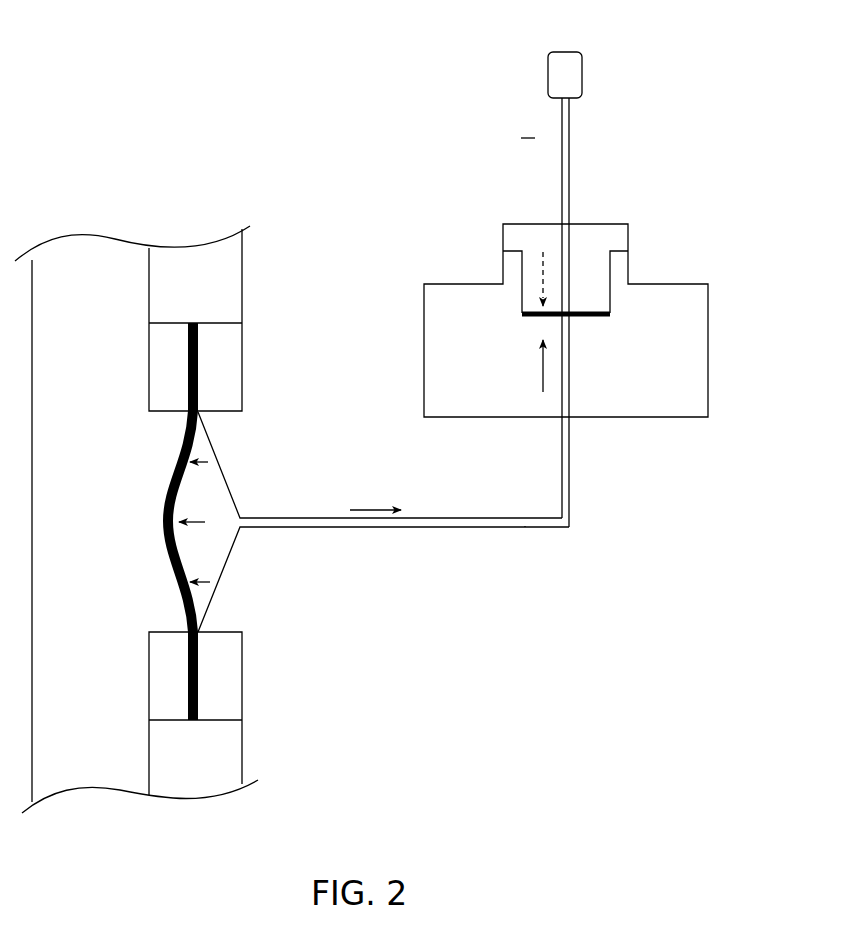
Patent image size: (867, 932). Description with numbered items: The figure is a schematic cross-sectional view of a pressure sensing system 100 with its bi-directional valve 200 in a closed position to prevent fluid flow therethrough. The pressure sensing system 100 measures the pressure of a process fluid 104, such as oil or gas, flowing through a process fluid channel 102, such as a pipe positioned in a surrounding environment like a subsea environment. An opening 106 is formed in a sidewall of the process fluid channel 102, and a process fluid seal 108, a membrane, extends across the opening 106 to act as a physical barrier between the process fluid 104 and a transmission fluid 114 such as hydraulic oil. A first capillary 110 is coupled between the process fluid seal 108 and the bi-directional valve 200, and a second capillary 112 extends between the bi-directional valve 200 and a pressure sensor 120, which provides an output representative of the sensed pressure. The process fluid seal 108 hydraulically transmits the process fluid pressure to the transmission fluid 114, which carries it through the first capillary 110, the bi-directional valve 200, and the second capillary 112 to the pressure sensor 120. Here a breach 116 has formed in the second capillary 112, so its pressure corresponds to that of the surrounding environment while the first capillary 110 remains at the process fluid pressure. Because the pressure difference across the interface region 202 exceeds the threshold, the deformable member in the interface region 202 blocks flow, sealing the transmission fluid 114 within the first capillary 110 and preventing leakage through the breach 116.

The pressure sensing system 100 is at (210, 80).
The process fluid channel 102 is at (242, 275).
The process fluid 104 is at (101, 535).
The opening 106 is at (228, 632).
The process fluid seal 108 is at (223, 498).
The first capillary 110 is at (402, 527).
The second capillary 112 is at (561, 158).
The transmission fluid 114 is at (525, 527).
The breach 116 is at (582, 134).
The pressure sensor 120 is at (558, 75).
The bi-directional valve 200 is at (699, 208).
The interface region 202 is at (610, 313).